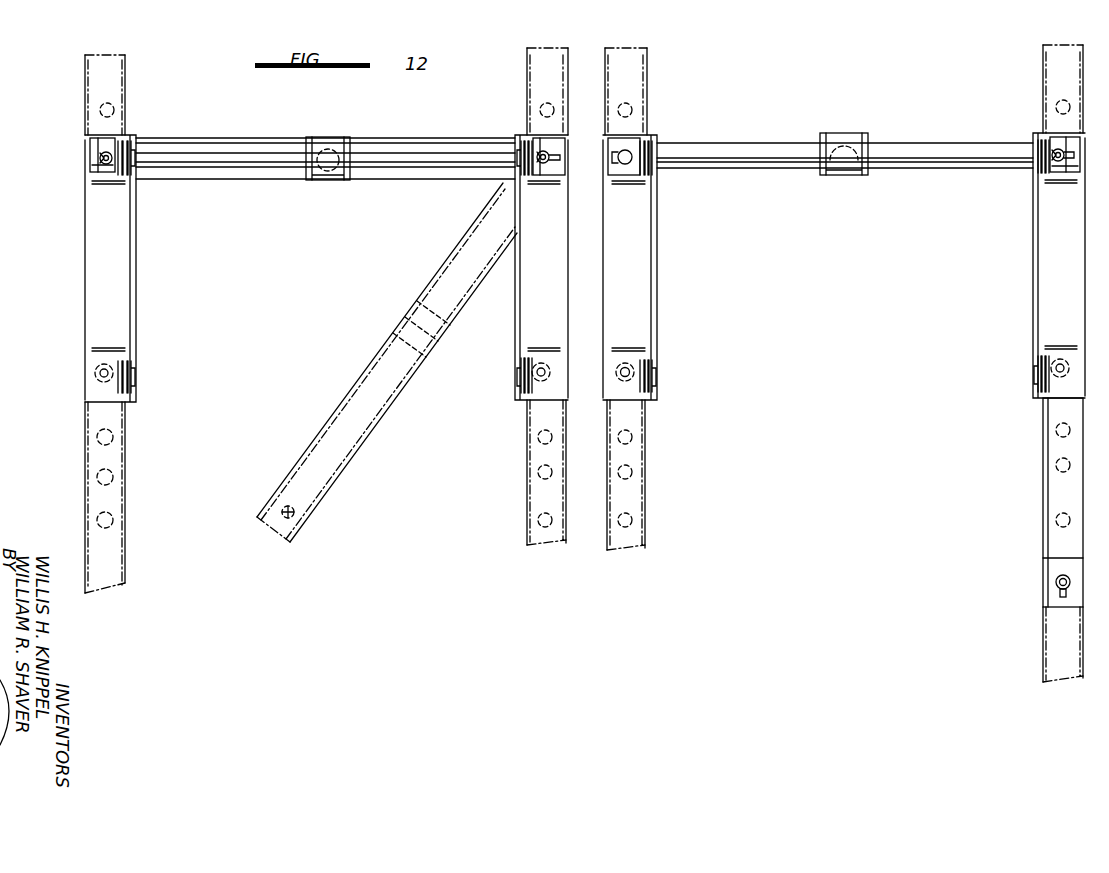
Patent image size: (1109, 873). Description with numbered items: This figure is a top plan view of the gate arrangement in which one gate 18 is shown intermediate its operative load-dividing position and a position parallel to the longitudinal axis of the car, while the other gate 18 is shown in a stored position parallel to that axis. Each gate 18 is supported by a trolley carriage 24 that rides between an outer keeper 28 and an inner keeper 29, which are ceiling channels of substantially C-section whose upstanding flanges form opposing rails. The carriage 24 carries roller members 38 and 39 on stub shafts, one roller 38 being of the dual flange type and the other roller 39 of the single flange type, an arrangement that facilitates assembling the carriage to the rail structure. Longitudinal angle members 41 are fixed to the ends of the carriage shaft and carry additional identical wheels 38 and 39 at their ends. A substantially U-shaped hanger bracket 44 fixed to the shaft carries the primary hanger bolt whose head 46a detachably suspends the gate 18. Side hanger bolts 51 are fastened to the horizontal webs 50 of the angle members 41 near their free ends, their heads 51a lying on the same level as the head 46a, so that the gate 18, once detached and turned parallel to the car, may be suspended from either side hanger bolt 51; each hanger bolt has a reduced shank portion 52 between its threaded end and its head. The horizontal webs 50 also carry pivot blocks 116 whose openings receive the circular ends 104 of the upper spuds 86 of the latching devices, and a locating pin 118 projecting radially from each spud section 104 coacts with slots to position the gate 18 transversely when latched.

The gate 18 is at (584, 363).
The trolley carriage 24 is at (584, 152).
The outer keeper 28 is at (118, 572).
The inner keeper 29 is at (616, 545).
The roller member 38 is at (126, 141).
The roller member 39 is at (530, 156).
The angle member 41 is at (557, 356).
The hanger bracket 44 is at (358, 180).
The head of primary hanger bolt 46a is at (334, 152).
The horizontal web 50 is at (100, 256).
The side hanger bolt 51 is at (100, 373).
The head of side hanger bolt 51a is at (96, 386).
The reduced shank portion 52 is at (526, 335).
The upper spud 86 is at (548, 152).
The circular end of spud 104 is at (100, 170).
The pivot block 116 is at (545, 131).
The locating pin 118 is at (98, 157).